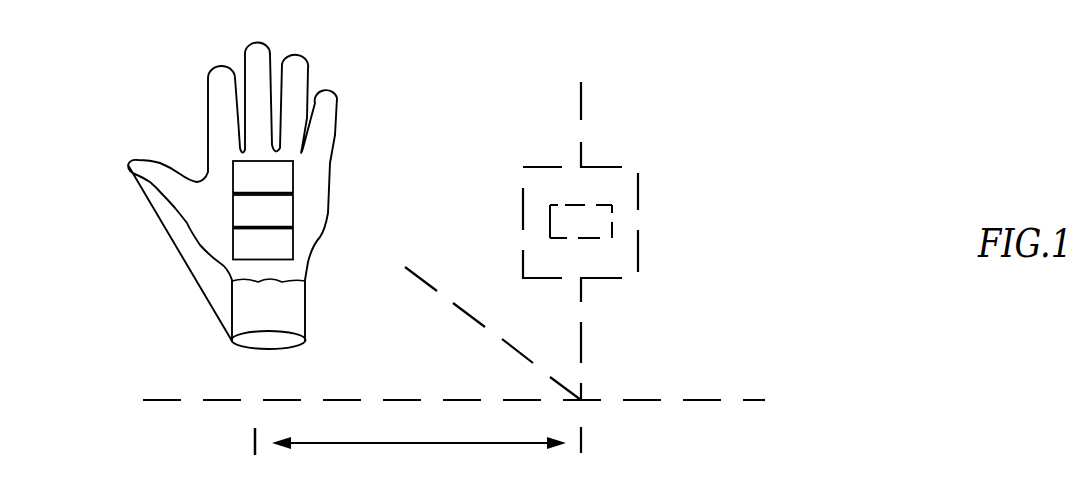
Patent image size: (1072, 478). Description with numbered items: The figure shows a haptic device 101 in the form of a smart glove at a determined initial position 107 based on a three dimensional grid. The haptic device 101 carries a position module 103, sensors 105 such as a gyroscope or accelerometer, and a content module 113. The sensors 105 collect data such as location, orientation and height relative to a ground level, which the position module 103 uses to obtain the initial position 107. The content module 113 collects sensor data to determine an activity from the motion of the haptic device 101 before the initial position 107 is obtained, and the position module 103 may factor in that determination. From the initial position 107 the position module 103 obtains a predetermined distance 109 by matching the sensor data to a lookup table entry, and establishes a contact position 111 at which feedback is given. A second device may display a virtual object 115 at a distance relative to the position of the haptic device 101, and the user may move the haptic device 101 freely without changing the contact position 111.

The haptic device 101 is at (333, 145).
The position module 103 is at (263, 177).
The sensors 105 is at (263, 211).
The content module 113 is at (263, 244).
The initial position 107 is at (263, 362).
The predetermined distance 109 is at (407, 445).
The contact position 111 is at (581, 221).
The virtual object 115 is at (638, 188).